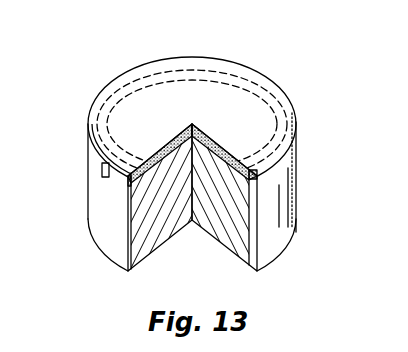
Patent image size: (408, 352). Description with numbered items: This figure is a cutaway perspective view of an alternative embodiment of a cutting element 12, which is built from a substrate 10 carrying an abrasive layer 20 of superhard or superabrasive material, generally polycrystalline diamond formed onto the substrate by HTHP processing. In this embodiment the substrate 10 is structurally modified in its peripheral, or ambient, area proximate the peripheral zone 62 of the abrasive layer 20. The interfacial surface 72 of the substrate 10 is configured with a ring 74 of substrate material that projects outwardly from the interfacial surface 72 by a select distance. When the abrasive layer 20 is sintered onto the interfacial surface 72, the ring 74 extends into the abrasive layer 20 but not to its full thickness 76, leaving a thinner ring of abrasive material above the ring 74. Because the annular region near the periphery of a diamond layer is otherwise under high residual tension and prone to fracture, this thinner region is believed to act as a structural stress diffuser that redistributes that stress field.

The substrate 10 is at (288, 196).
The cutting element 12 is at (309, 109).
The abrasive layer 20 is at (180, 108).
The peripheral zone 62 is at (125, 121).
The interfacial surface 72 is at (208, 156).
The ring 74 is at (253, 97).
The full thickness 76 is at (100, 175).